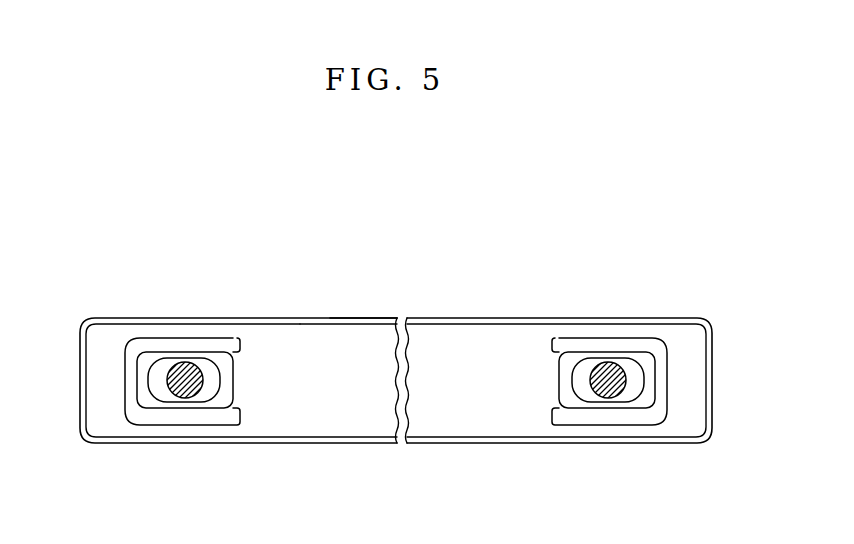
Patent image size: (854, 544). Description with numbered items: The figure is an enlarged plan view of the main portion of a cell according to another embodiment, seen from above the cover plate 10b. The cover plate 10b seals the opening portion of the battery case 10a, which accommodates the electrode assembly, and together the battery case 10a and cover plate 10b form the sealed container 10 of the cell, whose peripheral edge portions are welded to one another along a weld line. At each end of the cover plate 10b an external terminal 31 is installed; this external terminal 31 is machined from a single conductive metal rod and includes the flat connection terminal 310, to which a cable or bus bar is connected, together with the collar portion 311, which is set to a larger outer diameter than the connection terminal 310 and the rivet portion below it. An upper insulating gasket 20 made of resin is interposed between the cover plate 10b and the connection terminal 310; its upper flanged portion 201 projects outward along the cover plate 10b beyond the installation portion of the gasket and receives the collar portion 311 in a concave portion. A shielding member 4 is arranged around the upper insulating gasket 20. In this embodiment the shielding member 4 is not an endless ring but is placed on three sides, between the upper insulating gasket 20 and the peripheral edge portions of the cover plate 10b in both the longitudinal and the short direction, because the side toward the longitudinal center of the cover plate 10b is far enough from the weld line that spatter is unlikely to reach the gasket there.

The shielding member 4 is at (128, 379).
The bus bar plate 10 is at (378, 233).
The battery case 10a is at (353, 318).
The cover plate 10b is at (308, 365).
The upper insulating gasket 20 is at (222, 393).
The upper flanged portion 201 is at (185, 408).
The external terminal 31 is at (395, 330).
The connection terminal 310 is at (178, 368).
The collar portion 311 is at (210, 368).